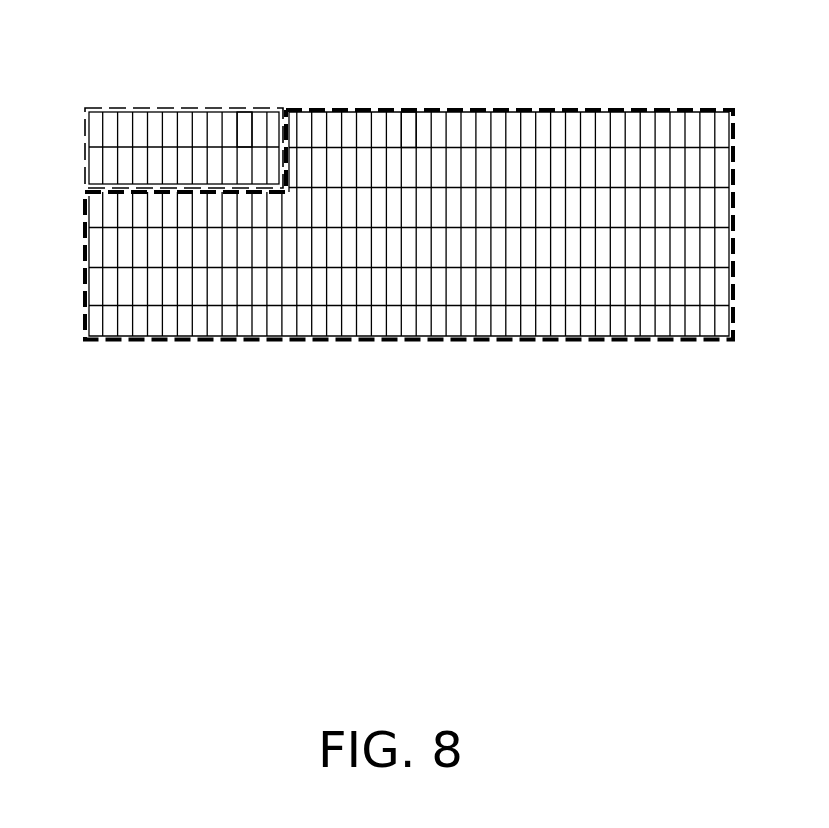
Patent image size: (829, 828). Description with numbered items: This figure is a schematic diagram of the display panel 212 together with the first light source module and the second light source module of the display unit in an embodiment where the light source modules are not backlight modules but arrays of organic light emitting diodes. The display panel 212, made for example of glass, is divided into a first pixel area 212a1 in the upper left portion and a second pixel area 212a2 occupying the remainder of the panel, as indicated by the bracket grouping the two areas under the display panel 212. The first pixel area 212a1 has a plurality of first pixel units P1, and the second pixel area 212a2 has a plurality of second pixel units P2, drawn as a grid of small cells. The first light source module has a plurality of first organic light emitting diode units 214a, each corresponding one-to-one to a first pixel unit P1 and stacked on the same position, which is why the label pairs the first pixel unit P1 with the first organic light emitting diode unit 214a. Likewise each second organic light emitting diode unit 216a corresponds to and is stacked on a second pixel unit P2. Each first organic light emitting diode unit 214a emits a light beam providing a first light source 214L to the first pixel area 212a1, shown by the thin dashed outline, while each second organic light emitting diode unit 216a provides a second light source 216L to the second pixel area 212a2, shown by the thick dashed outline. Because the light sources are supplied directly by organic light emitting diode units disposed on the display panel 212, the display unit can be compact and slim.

The display panel 212 is at (152, 422).
The first pixel area 212a1 is at (110, 108).
The second pixel area 212a2 is at (598, 107).
The first light source 214L is at (184, 106).
The first organic light emitting diode unit 214a is at (188, 113).
The first pixel unit P1 is at (246, 123).
The second light source 216L is at (409, 183).
The second organic light emitting diode unit 216a is at (409, 189).
The second pixel unit P2 is at (408, 128).